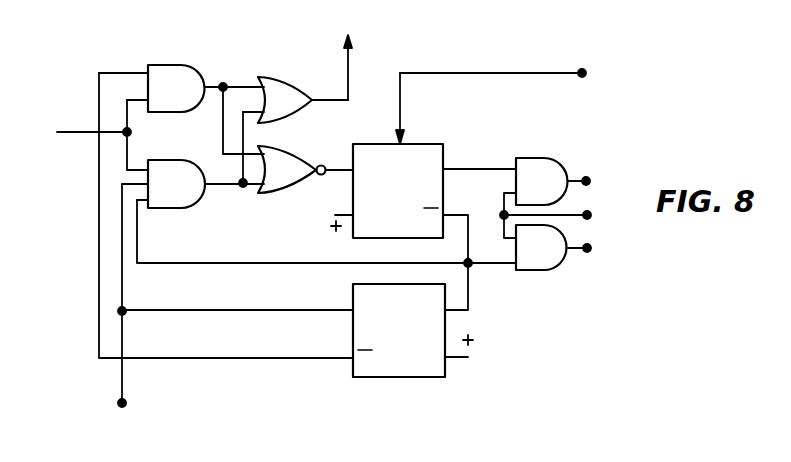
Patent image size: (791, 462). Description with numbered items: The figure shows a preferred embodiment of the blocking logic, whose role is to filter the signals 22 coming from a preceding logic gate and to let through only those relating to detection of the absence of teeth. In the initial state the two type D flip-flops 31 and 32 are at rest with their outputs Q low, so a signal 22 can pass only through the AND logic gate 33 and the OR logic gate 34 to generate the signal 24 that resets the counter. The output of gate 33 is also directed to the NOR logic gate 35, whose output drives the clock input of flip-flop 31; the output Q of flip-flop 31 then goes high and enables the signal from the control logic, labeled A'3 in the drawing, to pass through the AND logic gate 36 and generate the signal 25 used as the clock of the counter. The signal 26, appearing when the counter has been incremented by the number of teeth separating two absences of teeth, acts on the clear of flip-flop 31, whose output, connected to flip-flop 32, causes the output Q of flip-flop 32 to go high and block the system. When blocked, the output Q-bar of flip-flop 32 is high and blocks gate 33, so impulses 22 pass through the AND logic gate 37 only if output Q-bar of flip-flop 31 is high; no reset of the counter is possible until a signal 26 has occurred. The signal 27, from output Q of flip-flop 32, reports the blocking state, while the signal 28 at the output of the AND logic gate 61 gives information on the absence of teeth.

The signal 22 is at (78, 133).
The signal 24 is at (355, 62).
The signal 25 is at (593, 183).
The signal 26 is at (504, 104).
The signal 27 is at (119, 312).
The signal 28 is at (593, 251).
The D flip-flop 31 is at (425, 144).
The D flip-flop 32 is at (440, 378).
The AND logic gate 33 is at (163, 67).
The OR logic gate 34 is at (289, 83).
The NOR logic gate 35 is at (288, 191).
The AND logic gate 36 is at (541, 160).
The AND logic gate 37 is at (178, 208).
The logic AND gate 61 is at (545, 271).
The output signal line A'3 is at (564, 218).